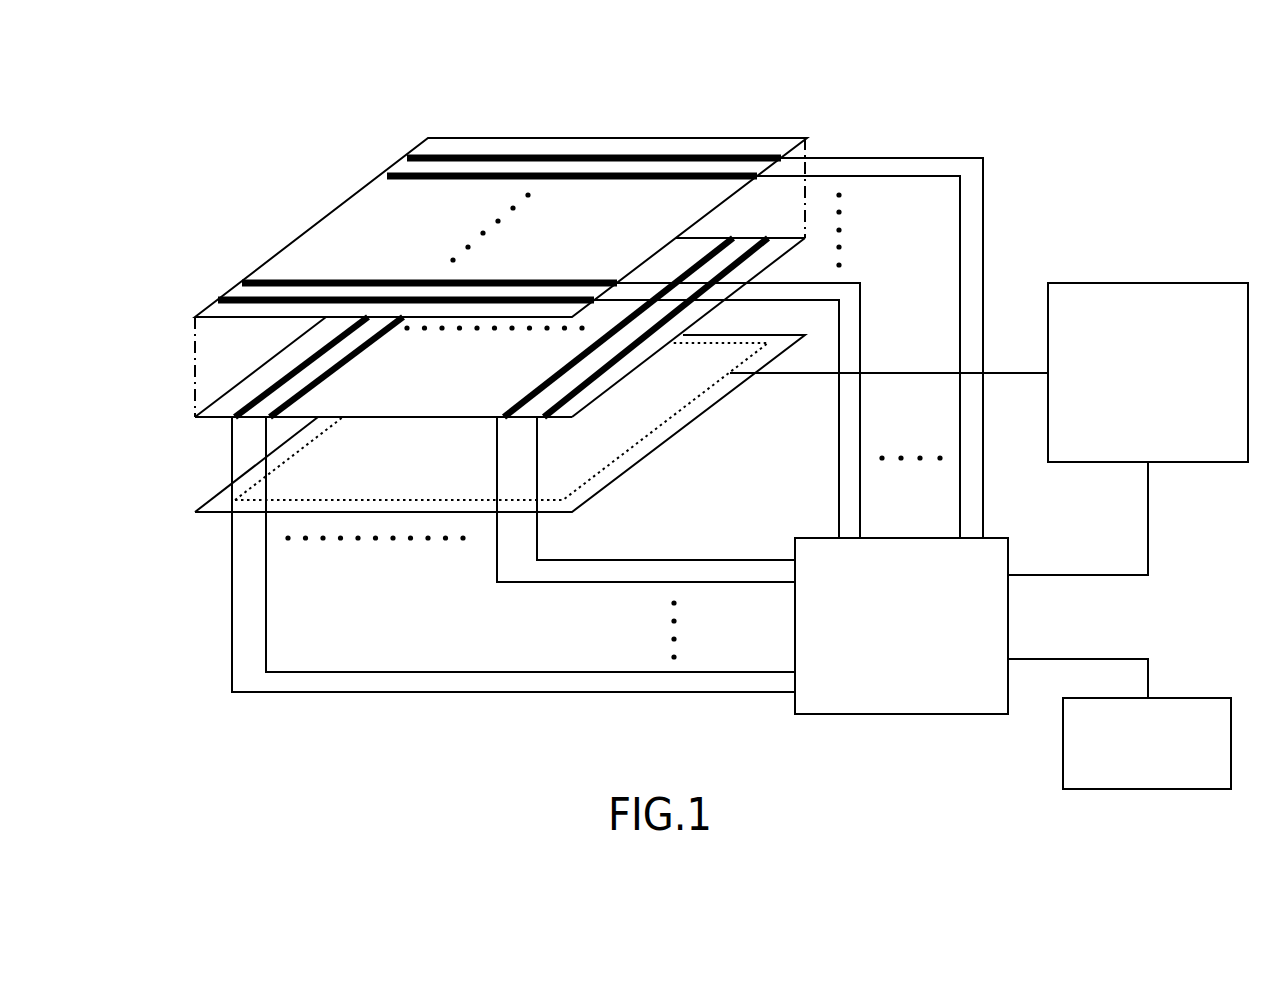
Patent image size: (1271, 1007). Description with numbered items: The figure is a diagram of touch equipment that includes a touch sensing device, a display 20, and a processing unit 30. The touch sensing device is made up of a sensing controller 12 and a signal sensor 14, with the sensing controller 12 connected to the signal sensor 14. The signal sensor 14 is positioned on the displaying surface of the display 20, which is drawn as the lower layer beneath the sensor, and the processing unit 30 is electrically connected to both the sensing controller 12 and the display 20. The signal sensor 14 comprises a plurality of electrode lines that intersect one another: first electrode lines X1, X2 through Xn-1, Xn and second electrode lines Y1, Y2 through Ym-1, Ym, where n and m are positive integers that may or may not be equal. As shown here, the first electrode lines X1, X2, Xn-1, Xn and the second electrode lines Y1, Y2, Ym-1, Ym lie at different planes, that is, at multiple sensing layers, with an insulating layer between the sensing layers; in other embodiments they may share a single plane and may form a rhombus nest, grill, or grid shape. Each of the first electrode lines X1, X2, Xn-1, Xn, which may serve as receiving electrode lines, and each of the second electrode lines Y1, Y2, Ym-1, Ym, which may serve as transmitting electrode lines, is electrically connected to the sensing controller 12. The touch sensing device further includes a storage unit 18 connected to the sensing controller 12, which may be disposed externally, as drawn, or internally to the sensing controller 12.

The sensing controller 12 is at (915, 714).
The signal sensor 14 is at (180, 313).
The storage unit 18 is at (1140, 789).
The display 20 is at (213, 512).
The processing unit 30 is at (1138, 283).
The first electrode line X1 is at (307, 363).
The first electrode line X2 is at (373, 337).
The first electrode line Xn-1 is at (598, 388).
The first electrode line Xn is at (637, 365).
The second electrode line Y1 is at (342, 298).
The second electrode line Y2 is at (513, 279).
The second electrode line Ym-1 is at (615, 175).
The second electrode line Ym is at (533, 157).